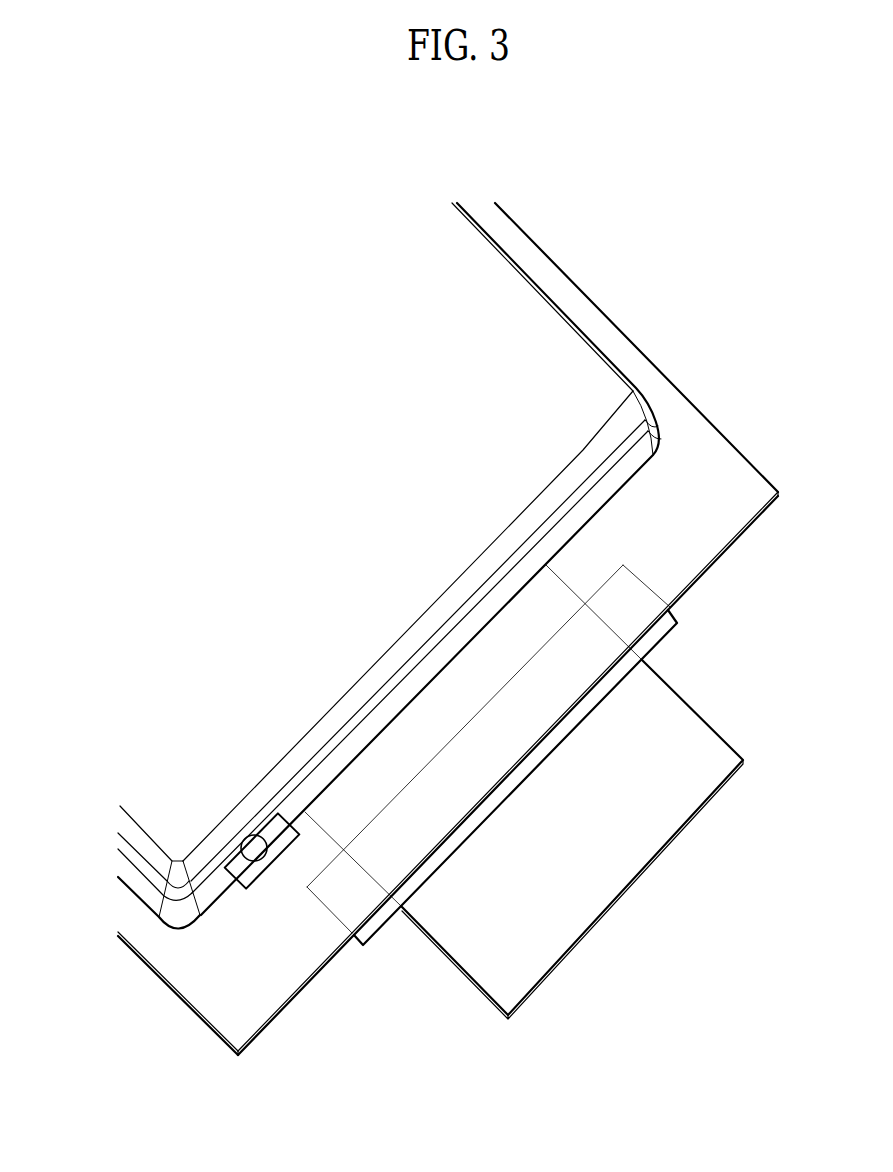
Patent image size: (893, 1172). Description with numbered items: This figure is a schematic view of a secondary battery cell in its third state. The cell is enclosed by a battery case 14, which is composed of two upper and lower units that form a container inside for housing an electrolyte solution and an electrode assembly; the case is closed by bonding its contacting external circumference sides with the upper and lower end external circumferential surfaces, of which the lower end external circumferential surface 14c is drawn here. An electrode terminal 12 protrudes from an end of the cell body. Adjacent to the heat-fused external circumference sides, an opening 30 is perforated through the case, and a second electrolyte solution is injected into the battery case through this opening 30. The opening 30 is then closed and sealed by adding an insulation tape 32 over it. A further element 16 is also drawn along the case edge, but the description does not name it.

The battery case 14 is at (693, 403).
The lower end external circumferential surface 14c is at (287, 988).
The edge clip member 16 is at (677, 623).
The electrode terminal 12 is at (623, 892).
The opening 30 is at (256, 855).
The insulation tape 32 is at (233, 868).